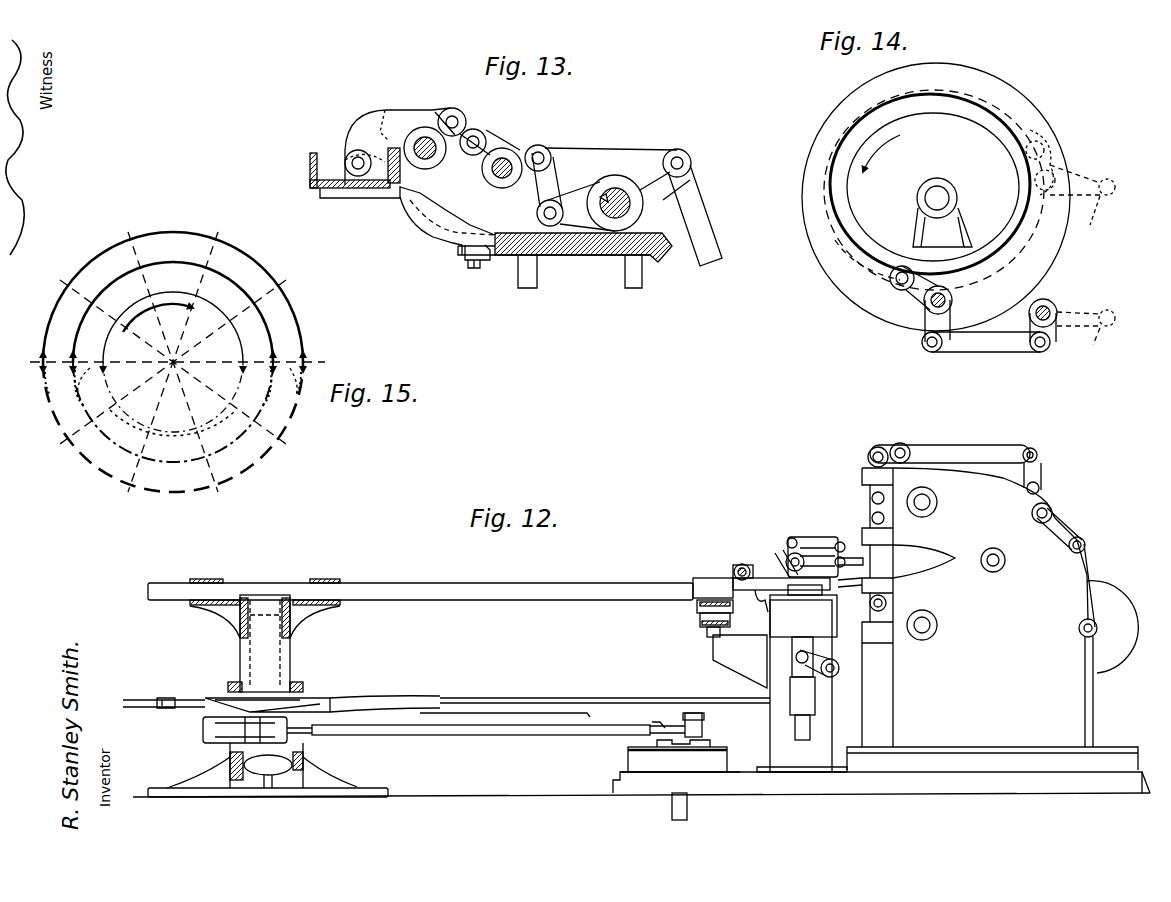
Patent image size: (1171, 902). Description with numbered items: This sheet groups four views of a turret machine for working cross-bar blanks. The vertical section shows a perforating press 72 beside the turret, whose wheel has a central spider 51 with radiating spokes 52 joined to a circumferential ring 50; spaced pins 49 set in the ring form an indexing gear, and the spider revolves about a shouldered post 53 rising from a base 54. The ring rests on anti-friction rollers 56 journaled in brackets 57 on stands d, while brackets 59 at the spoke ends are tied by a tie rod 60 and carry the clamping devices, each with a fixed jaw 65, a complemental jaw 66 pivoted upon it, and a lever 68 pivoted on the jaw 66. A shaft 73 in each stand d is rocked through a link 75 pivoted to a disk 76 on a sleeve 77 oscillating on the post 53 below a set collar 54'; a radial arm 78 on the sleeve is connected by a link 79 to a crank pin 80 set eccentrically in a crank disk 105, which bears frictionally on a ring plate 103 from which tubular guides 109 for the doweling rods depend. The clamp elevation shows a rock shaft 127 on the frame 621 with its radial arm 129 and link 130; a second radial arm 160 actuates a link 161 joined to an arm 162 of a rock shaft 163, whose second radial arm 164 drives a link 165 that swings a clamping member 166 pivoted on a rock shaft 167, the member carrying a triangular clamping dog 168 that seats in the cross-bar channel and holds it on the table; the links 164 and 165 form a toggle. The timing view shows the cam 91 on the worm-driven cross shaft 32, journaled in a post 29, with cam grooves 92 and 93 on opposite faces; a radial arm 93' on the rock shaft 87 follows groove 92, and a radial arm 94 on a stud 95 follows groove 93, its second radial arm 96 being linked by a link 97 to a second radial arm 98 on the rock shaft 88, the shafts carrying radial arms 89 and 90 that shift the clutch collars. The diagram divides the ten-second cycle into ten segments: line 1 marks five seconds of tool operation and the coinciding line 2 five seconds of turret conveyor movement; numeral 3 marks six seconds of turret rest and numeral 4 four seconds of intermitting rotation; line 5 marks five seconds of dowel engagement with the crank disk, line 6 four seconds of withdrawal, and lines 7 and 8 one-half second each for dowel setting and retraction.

In FIG. 15, the line 1 is at (160, 236).
In FIG. 15, the line 2 is at (180, 494).
In FIG. 15, the stationary period indicator 3 is at (158, 295).
In FIG. 15, the rotary movement period indicator 4 is at (176, 437).
In FIG. 15, the line 5 is at (162, 267).
In FIG. 15, the line 6 is at (176, 465).
In FIG. 15, the line 7 is at (289, 369).
In FIG. 15, the line 8 is at (84, 371).
In FIG. 13, the clamping member 166 is at (385, 110).
In FIG. 13, the link 165 is at (464, 115).
In FIG. 13, the second radial arm 164 is at (485, 135).
In FIG. 13, the rock shaft 163 is at (505, 160).
In FIG. 13, the arm 162 is at (535, 147).
In FIG. 13, the link 161 is at (556, 160).
In FIG. 13, the second radial arm 160 is at (565, 190).
In FIG. 13, the rock shaft 127 is at (614, 192).
In FIG. 13, the radial arm 129 is at (670, 150).
In FIG. 12, the radial arm 129 is at (795, 552).
In FIG. 13, the link 130 is at (716, 212).
In FIG. 12, the link 130 is at (775, 552).
In FIG. 13, the rock shaft 167 is at (437, 158).
In FIG. 13, the clamping dog 168 is at (380, 170).
In FIG. 13, the frame 621 is at (447, 225).
In FIG. 14, the timing cam 91 is at (815, 150).
In FIG. 14, the cam groove 92 is at (990, 112).
In FIG. 14, the cam groove 93 is at (895, 192).
In FIG. 14, the radial arm 93' is at (1054, 145).
In FIG. 14, the rock shaft 87 is at (1108, 180).
In FIG. 14, the radial arm 89 is at (1090, 219).
In FIG. 14, the cross shaft 32 is at (940, 192).
In FIG. 14, the post 29 is at (942, 238).
In FIG. 14, the radial arm 94 is at (905, 295).
In FIG. 14, the stud 95 is at (952, 300).
In FIG. 14, the second radial arm 96 is at (925, 325).
In FIG. 14, the link 97 is at (975, 344).
In FIG. 14, the second radial arm 98 is at (1046, 350).
In FIG. 14, the rock shaft 88 is at (1047, 305).
In FIG. 14, the radial arm 90 is at (1086, 337).
In FIG. 12, the spokes 52 is at (488, 600).
In FIG. 12, the central spider 51 is at (218, 614).
In FIG. 12, the shouldered post 53 is at (240, 660).
In FIG. 12, the set collar 54' is at (300, 670).
In FIG. 12, the disk 76 is at (200, 700).
In FIG. 12, the radial arm 78 is at (203, 730).
In FIG. 12, the sleeve 77 is at (243, 745).
In FIG. 12, the base 54 is at (276, 770).
In FIG. 12, the link 75 is at (535, 700).
In FIG. 12, the link 79 is at (492, 735).
In FIG. 12, the crank disk 105 is at (648, 727).
In FIG. 12, the crank pin 80 is at (703, 717).
In FIG. 12, the ring plate 103 is at (628, 762).
In FIG. 12, the tubular guides 109 is at (688, 808).
In FIG. 12, the stands d is at (775, 735).
In FIG. 12, the shaft 73 is at (840, 667).
In FIG. 12, the brackets 57 is at (740, 661).
In FIG. 12, the anti-friction rollers 56 is at (712, 640).
In FIG. 12, the brackets 59 is at (728, 580).
In FIG. 12, the tie rod 60 is at (742, 563).
In FIG. 12, the spaced pins 49 is at (697, 606).
In FIG. 12, the circumferential ring 50 is at (700, 620).
In FIG. 12, the lever 68 is at (818, 537).
In FIG. 12, the complemental jaw 66 is at (858, 550).
In FIG. 12, the fixed jaw 65 is at (850, 591).
In FIG. 12, the perforating press 72 is at (1000, 595).